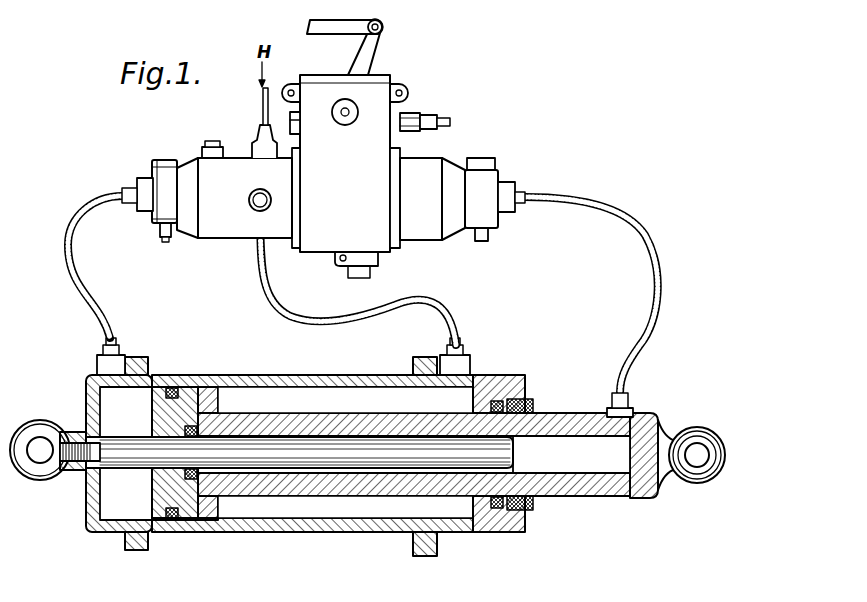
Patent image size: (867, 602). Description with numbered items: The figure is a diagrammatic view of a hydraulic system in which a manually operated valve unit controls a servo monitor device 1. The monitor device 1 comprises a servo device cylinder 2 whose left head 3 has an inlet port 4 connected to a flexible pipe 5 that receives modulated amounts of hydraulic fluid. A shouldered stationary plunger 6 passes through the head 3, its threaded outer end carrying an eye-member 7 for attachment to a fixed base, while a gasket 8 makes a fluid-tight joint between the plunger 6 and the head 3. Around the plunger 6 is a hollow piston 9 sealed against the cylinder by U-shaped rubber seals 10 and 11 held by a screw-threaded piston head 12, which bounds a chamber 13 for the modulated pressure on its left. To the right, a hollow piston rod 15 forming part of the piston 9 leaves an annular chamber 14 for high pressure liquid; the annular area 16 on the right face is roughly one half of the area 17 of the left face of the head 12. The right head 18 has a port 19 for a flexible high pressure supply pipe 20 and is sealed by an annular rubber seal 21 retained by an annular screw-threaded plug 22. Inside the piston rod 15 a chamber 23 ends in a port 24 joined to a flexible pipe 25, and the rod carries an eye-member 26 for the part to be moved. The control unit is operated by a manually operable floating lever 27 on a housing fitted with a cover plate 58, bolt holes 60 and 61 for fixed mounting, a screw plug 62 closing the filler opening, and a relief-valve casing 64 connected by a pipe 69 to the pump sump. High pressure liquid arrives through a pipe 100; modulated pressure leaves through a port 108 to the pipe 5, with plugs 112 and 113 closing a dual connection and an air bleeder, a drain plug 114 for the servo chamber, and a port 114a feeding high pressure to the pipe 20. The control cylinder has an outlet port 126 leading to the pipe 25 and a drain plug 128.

The monitor device 1 is at (283, 375).
The servo device cylinder 2 is at (270, 534).
The head 3 is at (92, 374).
The inlet port 4 is at (111, 384).
The flexible pipe 5 is at (106, 293).
The shouldered stationary plunger 6 is at (135, 463).
The eye-member 7 is at (40, 477).
The gasket 8 is at (99, 468).
The hollow piston 9 is at (203, 513).
The U-shaped rubber seal 10 is at (180, 381).
The U-shaped rubber seal 11 is at (185, 476).
The screw-threaded piston head 12 is at (157, 423).
The chamber 13 is at (118, 519).
The annular chamber 14 is at (348, 396).
The hollow piston rod 15 is at (341, 485).
The annular area 16 is at (236, 402).
The area 17 is at (152, 501).
The head 18 is at (498, 383).
The port 19 is at (452, 386).
The flexible high pressure liquid supply pipe 20 is at (461, 326).
The annular rubber seal 21 is at (487, 531).
The annular screw-threaded plug 22 is at (535, 407).
The chamber 23 is at (556, 471).
The port 24 is at (615, 431).
The flexible pipe 25 is at (642, 344).
The eye-member 26 is at (688, 476).
The manually operable floating lever 27 is at (380, 47).
The cover plate 58 is at (322, 76).
The bolt hole 60 is at (402, 90).
The bolt hole 61 is at (291, 85).
The screw plug 62 is at (298, 124).
The casing 64 is at (418, 115).
The pipe 69 is at (446, 123).
The pipe 100 is at (262, 109).
The port 108 is at (131, 187).
The plug 112 is at (161, 160).
The plug 113 is at (210, 146).
The drain plug 114 is at (162, 242).
The port 114a is at (257, 208).
The outlet port 126 is at (505, 190).
The drain plug 128 is at (488, 240).